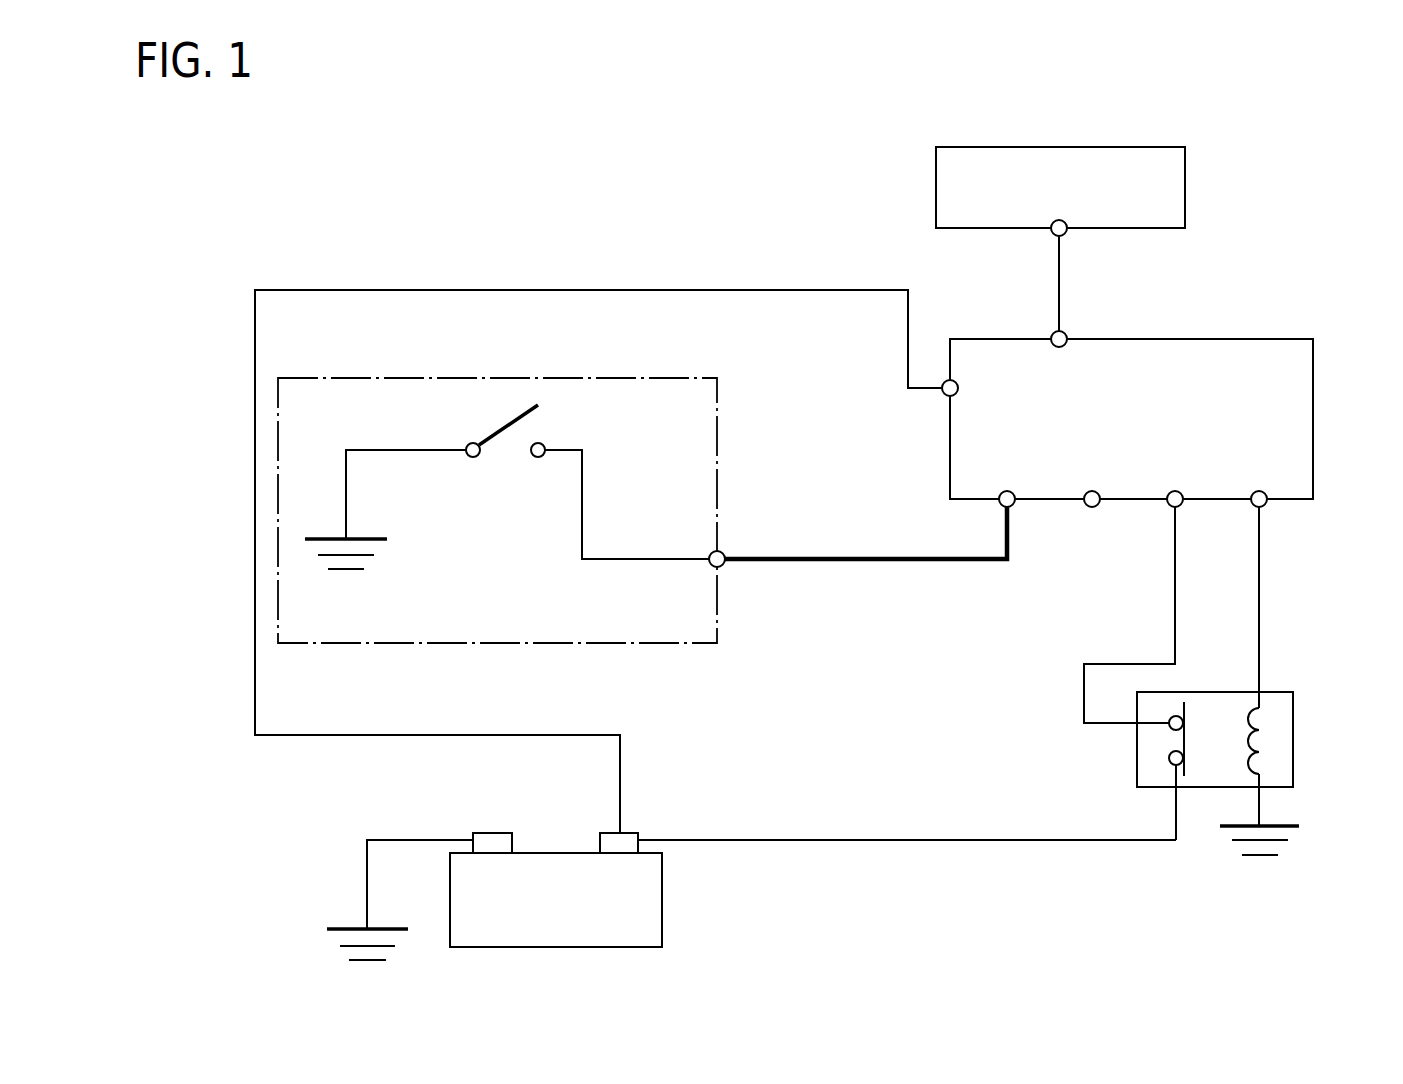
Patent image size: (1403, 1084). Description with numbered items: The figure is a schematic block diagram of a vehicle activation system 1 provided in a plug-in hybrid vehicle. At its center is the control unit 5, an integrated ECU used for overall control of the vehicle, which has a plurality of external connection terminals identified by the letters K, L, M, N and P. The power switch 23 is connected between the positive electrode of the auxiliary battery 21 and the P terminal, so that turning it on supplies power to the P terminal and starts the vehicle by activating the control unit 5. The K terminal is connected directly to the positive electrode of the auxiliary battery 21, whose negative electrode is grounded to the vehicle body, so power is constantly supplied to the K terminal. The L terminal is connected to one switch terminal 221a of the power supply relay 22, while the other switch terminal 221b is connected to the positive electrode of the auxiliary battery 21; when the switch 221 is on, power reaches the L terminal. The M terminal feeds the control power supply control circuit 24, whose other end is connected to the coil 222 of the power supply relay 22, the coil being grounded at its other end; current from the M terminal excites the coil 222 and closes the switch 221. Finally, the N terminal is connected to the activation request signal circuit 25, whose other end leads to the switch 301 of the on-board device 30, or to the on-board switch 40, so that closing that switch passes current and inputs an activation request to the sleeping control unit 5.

The vehicle activation system 1 is at (779, 153).
The control unit 5 is at (1313, 392).
The auxiliary battery 21 is at (662, 903).
The power supply relay 22 is at (1204, 763).
The switch 221 is at (1186, 740).
The switch terminal 221a is at (1171, 733).
The switch terminal 221b is at (1168, 764).
The coil 222 is at (1246, 745).
The power switch 23 is at (1185, 190).
The control power supply control circuit 24 is at (1259, 600).
The activation request signal circuit 25 is at (865, 563).
The on-board device 30 is at (717, 433).
The switch 301 is at (504, 394).
The on-board switch 40 is at (502, 421).